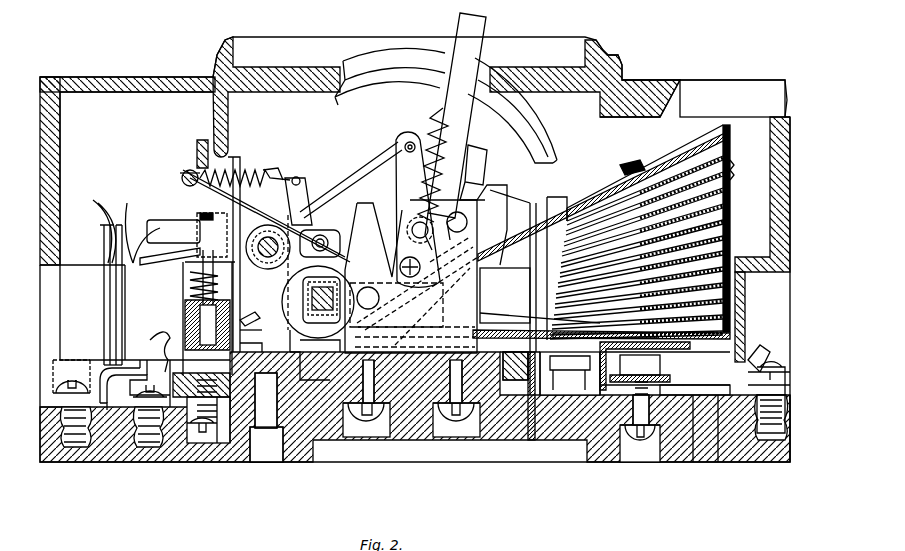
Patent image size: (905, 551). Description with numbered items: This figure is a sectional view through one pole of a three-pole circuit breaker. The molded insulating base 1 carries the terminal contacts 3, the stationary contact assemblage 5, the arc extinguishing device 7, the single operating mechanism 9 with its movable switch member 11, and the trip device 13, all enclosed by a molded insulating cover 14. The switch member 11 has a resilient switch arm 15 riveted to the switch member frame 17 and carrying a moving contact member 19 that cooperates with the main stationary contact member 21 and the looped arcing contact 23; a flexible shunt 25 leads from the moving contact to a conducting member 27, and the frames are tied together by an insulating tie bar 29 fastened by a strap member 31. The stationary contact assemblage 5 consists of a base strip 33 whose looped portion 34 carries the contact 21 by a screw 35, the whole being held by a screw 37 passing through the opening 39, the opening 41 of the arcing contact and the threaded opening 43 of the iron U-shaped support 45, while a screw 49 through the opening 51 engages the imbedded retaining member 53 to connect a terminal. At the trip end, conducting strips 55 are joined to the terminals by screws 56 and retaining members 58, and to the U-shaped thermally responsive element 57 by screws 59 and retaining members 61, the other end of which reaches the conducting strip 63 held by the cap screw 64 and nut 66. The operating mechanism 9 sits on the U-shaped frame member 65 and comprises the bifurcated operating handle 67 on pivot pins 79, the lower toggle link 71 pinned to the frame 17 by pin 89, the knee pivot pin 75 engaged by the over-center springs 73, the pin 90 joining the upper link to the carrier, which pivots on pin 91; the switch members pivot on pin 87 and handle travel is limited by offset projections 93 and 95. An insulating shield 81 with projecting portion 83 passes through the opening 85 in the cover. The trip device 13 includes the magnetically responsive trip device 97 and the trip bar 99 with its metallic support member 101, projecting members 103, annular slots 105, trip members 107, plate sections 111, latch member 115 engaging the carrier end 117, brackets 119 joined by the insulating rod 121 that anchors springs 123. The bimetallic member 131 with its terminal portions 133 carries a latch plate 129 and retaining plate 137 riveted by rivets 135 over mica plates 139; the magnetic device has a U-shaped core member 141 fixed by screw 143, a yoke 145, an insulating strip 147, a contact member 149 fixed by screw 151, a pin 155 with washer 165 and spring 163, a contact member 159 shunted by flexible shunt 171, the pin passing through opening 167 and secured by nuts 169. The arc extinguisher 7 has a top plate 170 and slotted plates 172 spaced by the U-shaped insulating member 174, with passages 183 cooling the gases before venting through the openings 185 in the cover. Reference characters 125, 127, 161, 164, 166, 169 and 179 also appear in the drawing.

The base 1 is at (292, 460).
The terminal contacts 3 is at (50, 362).
The stationary contact assemblages 5 is at (693, 372).
The arc extinguishing device 7 is at (628, 155).
The circuit breaker operating mechanism 9 is at (390, 190).
The movable switch members 11 is at (520, 304).
The trip device 13 is at (153, 166).
The cover 14 is at (650, 82).
The resilient switch arm 15 is at (490, 324).
The switch member frame 17 is at (398, 267).
The moving contact member 19 is at (508, 364).
The main stationary contact member 21 is at (490, 432).
The arcing contact 23 is at (680, 340).
The flexible shunt 25 is at (505, 340).
The conducting member 27 is at (310, 388).
The insulating tie bar 29 is at (300, 345).
The strap member 31 is at (375, 232).
The base strip 33 is at (693, 440).
The looped portion 34 is at (532, 440).
The screw 35 is at (572, 362).
The screw 37 is at (642, 460).
The opening 39 is at (680, 382).
The opening 41 is at (655, 362).
The threaded opening 43 is at (636, 345).
The U-shaped support 45 is at (567, 440).
The screw 49 is at (755, 345).
The opening 51 is at (752, 462).
The threaded retaining member 53 is at (787, 462).
The conducting strip 55 is at (105, 368).
The screw 56 is at (60, 382).
The thermally responsive element 57 is at (93, 243).
The threaded retaining member 58 is at (62, 428).
The screw 59 is at (140, 366).
The retaining member 61 is at (170, 462).
The conducting strip 63 is at (222, 415).
The cap screw 64 is at (266, 444).
The U-shaped frame member 65 is at (472, 290).
The nut 66 is at (322, 437).
The bifurcated operating handle 67 is at (427, 116).
The lower toggle link 71 is at (460, 233).
The over-center springs 73 is at (460, 148).
The knee pivot pin 75 is at (395, 226).
The pivot pin 79 is at (440, 250).
The insulating shield 81 is at (522, 115).
The projecting portion 83 is at (488, 32).
The opening 85 is at (372, 62).
The pin 87 is at (378, 298).
The pin 89 is at (462, 290).
The pin 90 is at (400, 146).
The pin 91 is at (490, 210).
The offset projection 93 is at (360, 162).
The offset projection 95 is at (470, 225).
The magnetically responsive trip device 97 is at (145, 297).
The trip bar 99 is at (260, 228).
The metallic support member 101 is at (318, 233).
The outwardly projecting member 103 is at (175, 252).
The annular slot 105 is at (300, 222).
The trip member 107 is at (173, 231).
The plate section 111 is at (335, 175).
The latch member 115 is at (262, 172).
The end of the carrier 117 is at (317, 190).
The upstanding bracket member 119 is at (178, 190).
The insulating rod 121 is at (192, 170).
The spring 123 is at (245, 165).
The trip coil 125 is at (280, 295).
The actuating arm 127 is at (130, 215).
The latch plate 129 is at (190, 262).
The bimetallic member 131 is at (118, 313).
The terminal portion 133 is at (138, 445).
The rivet 135 is at (100, 268).
The metallic retaining plate 137 is at (112, 290).
The mica plate 139 is at (95, 210).
The U-shaped core member 141 is at (268, 462).
The screw 143 is at (207, 462).
The yoke 145 is at (230, 462).
The strip of insulating material 147 is at (200, 462).
The contact member 149 is at (243, 335).
The screw 151 is at (258, 292).
The pin 155 is at (193, 284).
The contact member 159 is at (240, 322).
The support 161 is at (240, 350).
The spring 163 is at (185, 312).
The bimetal anchor 164 is at (548, 168).
The washer 165 is at (190, 298).
The handle bracket 166 is at (470, 168).
The opening 167 is at (230, 208).
The nut 169 is at (185, 218).
The top plate 170 is at (731, 147).
The flexible shunt 171 is at (155, 337).
The slotted plate 172 is at (732, 190).
The U-shaped insulating member 174 is at (668, 152).
The trip strip 179 is at (630, 195).
The passage 183 is at (718, 440).
The opening 185 is at (718, 97).